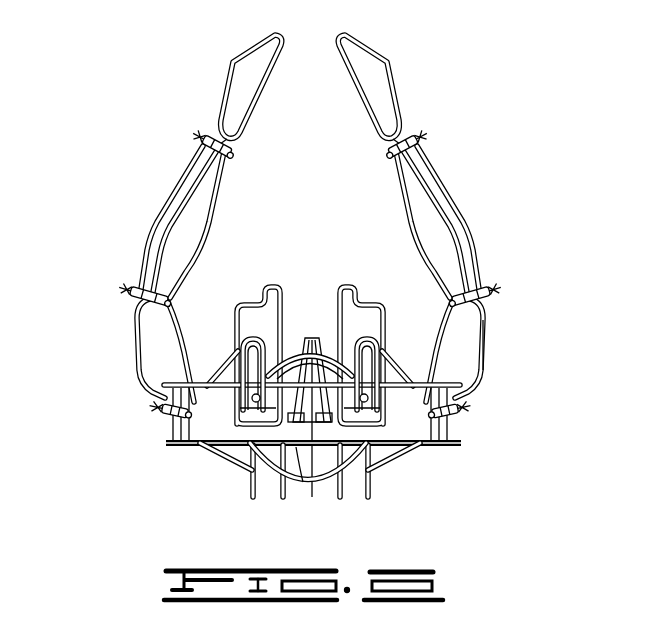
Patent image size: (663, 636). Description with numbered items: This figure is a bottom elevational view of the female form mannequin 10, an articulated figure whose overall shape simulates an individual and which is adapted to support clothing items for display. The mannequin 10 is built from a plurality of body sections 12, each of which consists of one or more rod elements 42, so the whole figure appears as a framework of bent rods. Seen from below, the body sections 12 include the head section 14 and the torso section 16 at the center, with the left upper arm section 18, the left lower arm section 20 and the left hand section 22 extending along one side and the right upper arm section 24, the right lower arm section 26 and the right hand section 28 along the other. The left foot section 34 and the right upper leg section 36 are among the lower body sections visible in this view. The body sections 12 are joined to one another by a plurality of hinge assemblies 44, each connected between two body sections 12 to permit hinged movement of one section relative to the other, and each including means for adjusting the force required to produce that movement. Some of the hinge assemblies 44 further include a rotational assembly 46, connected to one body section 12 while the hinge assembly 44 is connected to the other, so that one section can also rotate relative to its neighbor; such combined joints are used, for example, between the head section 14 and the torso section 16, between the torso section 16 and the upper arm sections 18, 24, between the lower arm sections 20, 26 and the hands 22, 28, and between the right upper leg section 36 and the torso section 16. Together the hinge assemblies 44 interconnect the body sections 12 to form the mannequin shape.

The mannequin 10 is at (510, 367).
The body sections 12 is at (156, 200).
The head section 14 is at (280, 503).
The torso section 16 is at (414, 460).
The left upper arm section 18 is at (135, 352).
The left lower arm section 20 is at (226, 218).
The left hand section 22 is at (224, 86).
The right upper arm section 24 is at (496, 328).
The right lower arm section 26 is at (470, 212).
The right hand section 28 is at (400, 70).
The left foot section 34 is at (248, 296).
The right upper leg section 36 is at (376, 292).
The rod elements 42 is at (436, 166).
The hinge assemblies 44 is at (234, 152).
The rotational assembly 46 is at (174, 438).